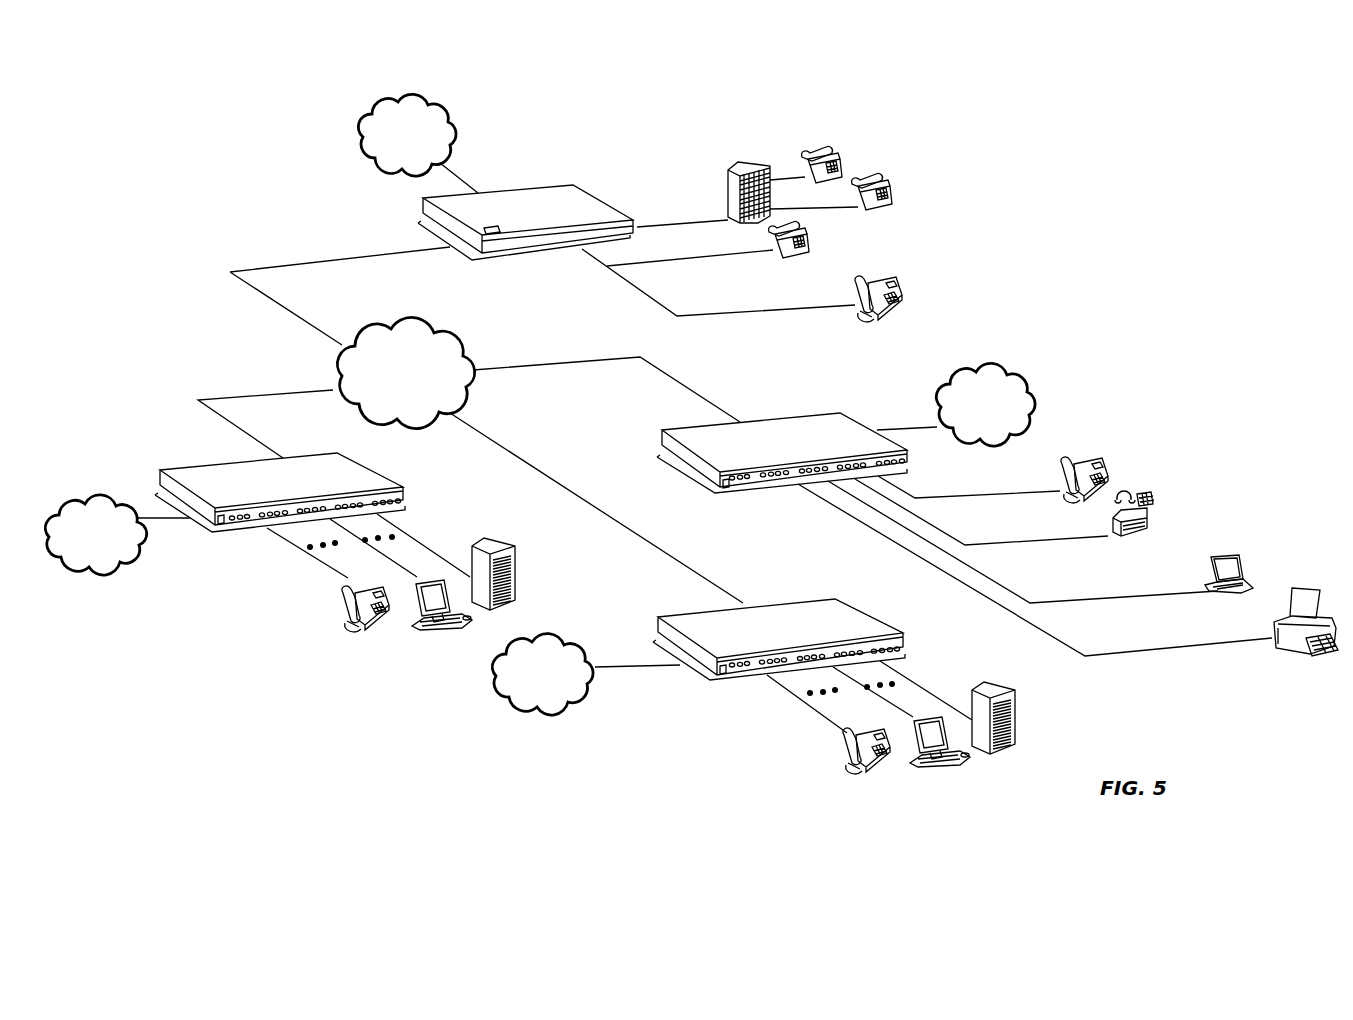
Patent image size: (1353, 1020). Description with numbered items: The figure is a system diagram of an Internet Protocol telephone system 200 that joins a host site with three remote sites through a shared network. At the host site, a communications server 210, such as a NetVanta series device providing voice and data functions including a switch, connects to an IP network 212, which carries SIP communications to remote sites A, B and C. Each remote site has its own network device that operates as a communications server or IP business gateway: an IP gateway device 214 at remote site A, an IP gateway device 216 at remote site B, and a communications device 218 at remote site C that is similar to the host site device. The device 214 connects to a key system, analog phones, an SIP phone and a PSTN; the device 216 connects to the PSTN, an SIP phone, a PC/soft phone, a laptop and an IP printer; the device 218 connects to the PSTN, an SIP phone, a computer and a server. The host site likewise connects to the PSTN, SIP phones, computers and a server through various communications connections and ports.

The Internet Protocol (IP) telephone system 200 is at (614, 139).
The communications server 210 is at (305, 452).
The IP network 212 is at (464, 398).
The IP gateway device 214 is at (528, 185).
The IP gateway device 216 is at (775, 415).
The communications device 218 is at (807, 600).